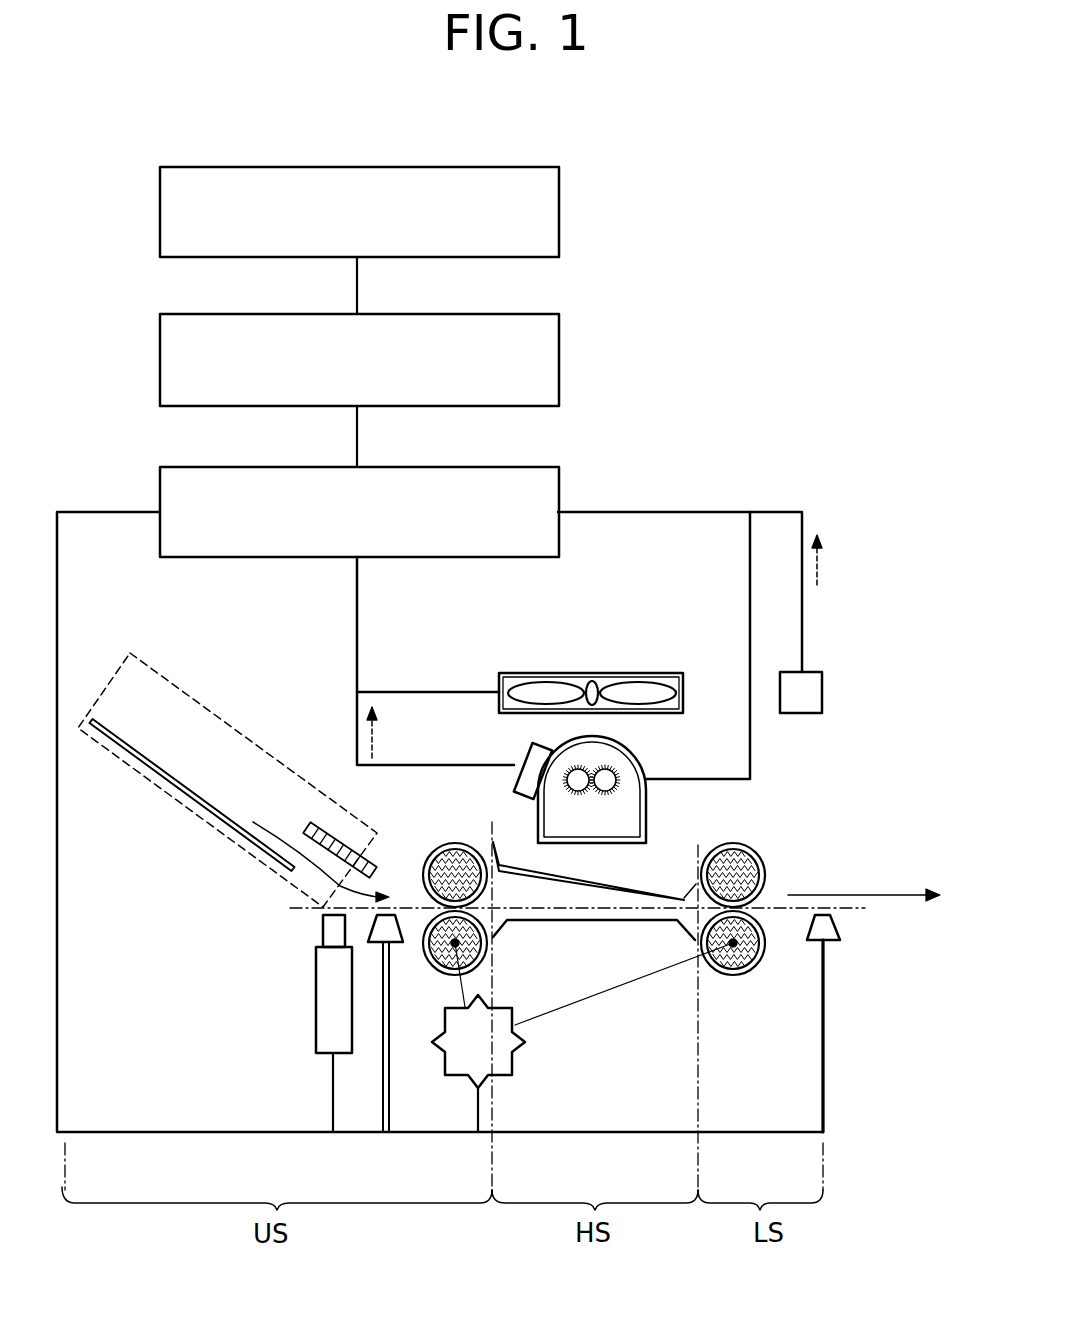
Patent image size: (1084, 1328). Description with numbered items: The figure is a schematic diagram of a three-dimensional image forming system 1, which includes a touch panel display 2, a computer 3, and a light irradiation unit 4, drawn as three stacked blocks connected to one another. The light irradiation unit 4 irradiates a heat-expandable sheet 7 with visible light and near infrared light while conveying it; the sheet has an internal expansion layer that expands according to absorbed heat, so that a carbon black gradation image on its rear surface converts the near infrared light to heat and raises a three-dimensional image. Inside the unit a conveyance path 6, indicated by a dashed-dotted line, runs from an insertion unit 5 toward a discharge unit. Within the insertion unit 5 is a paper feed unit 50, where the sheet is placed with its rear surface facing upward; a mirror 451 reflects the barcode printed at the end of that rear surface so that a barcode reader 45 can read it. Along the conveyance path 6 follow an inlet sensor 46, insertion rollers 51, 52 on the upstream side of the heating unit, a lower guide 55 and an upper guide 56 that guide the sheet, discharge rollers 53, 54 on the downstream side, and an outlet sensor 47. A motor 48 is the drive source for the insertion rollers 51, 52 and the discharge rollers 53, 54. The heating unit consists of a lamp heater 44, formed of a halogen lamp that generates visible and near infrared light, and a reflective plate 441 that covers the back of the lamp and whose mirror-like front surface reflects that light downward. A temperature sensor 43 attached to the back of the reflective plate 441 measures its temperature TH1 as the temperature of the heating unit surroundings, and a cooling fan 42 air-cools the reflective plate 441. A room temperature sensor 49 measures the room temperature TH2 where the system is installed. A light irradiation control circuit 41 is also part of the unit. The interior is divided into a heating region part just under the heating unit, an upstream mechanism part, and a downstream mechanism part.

The three-dimensional image forming system 1 is at (665, 175).
The touch panel display 2 is at (468, 167).
The computer 3 is at (468, 316).
The light irradiation unit 4 is at (643, 482).
The light irradiation control circuit 41 is at (468, 466).
The cooling fan 42 is at (603, 673).
The temperature sensor 43 is at (530, 743).
The lamp heater 44 is at (642, 788).
The reflective plate 441 is at (645, 808).
The barcode reader 45 is at (316, 998).
The inlet sensor 46 is at (393, 945).
The outlet sensor 47 is at (833, 943).
The motor 48 is at (515, 1052).
The room temperature sensor 49 is at (810, 670).
The insertion unit 5 is at (76, 727).
The paper feed unit 50 is at (158, 675).
The insertion roller 51 is at (487, 960).
The insertion roller 52 is at (458, 842).
The discharge roller 53 is at (733, 973).
The discharge roller 54 is at (763, 848).
The lower guide 55 is at (563, 922).
The upper guide 56 is at (603, 883).
The conveyance path 6 is at (865, 910).
The heat-expandable sheet 7 is at (173, 773).
The mirror 451 is at (337, 820).
The temperature of the reflective plate TH1 is at (373, 740).
The room temperature TH2 is at (820, 569).